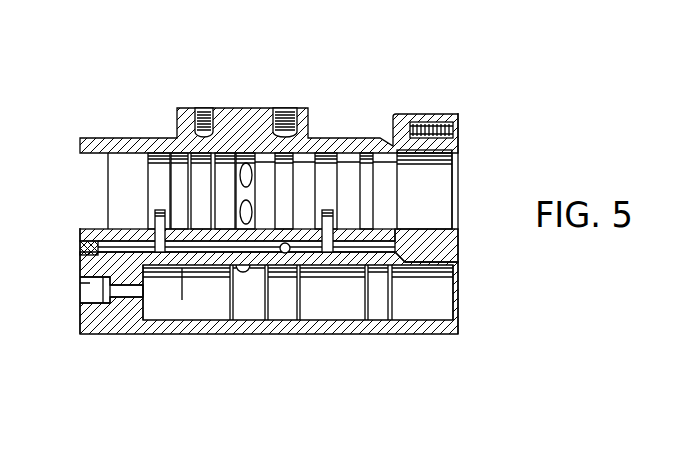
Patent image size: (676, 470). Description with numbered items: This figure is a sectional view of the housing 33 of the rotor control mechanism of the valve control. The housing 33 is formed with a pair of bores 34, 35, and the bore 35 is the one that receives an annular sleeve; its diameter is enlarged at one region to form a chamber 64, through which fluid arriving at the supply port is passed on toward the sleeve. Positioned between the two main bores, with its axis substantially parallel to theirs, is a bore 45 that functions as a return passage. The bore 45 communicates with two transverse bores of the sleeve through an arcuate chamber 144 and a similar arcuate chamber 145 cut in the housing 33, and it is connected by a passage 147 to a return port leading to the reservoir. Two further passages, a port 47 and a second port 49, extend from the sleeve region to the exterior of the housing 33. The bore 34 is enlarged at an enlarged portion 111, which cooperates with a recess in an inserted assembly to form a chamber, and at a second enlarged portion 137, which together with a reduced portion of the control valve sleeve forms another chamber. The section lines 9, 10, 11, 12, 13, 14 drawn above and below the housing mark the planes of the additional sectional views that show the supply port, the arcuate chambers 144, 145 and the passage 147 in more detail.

The housing 33 is at (78, 317).
The bore 34 is at (146, 318).
The bore 35 is at (388, 224).
The bore 45 is at (77, 280).
The passage or port 47 is at (192, 111).
The passage or port 49 is at (292, 114).
The chamber 64 is at (350, 168).
The enlarged portion of bore 34 111 is at (237, 318).
The enlarged portion of bore 34 137 is at (324, 318).
The arcuate chamber 144 is at (155, 231).
The arcuate chamber 145 is at (332, 232).
The passage 147 is at (291, 255).
The section line 9- 9 is at (387, 73).
The section line 10- 10 is at (238, 50).
The section line 11- 11 is at (203, 63).
The section line 12- 12 is at (176, 60).
The section line 13- 13 is at (327, 52).
The section line 14- 14 is at (285, 87).